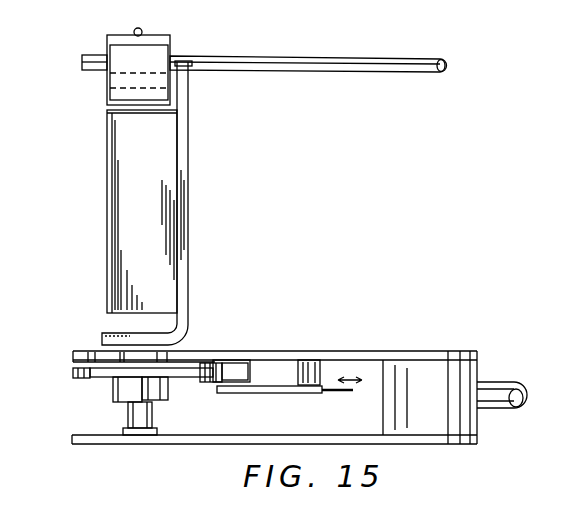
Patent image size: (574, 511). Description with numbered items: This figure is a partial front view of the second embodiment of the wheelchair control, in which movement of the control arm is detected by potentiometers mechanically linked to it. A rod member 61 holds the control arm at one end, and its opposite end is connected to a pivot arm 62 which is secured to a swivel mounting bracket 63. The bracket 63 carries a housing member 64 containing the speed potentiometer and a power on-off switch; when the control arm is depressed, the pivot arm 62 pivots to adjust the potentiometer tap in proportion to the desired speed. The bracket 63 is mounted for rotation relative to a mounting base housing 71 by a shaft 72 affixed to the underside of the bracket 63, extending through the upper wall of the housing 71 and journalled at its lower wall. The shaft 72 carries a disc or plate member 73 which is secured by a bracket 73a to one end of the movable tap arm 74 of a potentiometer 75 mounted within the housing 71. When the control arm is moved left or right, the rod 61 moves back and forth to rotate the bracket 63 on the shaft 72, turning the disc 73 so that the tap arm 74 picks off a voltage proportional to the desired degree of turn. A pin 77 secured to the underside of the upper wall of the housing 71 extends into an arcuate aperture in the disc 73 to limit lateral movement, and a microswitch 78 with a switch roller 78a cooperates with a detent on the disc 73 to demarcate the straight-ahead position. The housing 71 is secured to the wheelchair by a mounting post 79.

The rod member 61 is at (328, 56).
The pivot arm 62 is at (160, 36).
The swivel mounting bracket 63 is at (190, 154).
The housing member 64 is at (123, 150).
The mounting base housing 71 is at (395, 352).
The shaft 72 is at (128, 410).
The disc or plate member 73 is at (90, 373).
The bracket 73a is at (210, 428).
The movable tap arm 74 is at (205, 392).
The potentiometer 75 is at (280, 395).
The pin 77 is at (92, 358).
The microswitch 78 is at (240, 362).
The switch roller 78a is at (242, 333).
The mounting post 79 is at (505, 382).